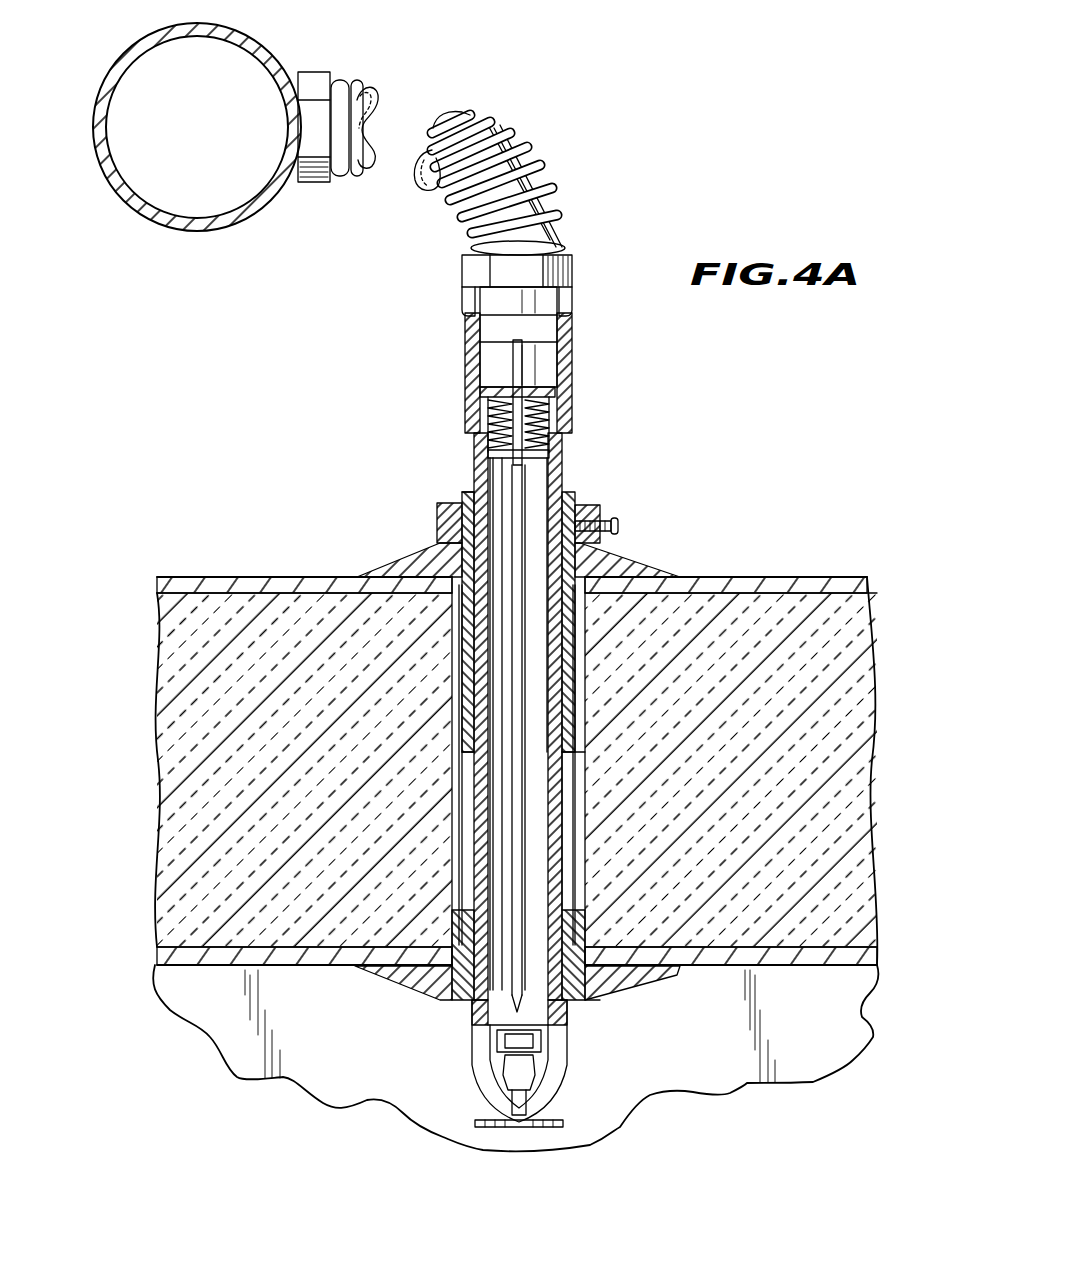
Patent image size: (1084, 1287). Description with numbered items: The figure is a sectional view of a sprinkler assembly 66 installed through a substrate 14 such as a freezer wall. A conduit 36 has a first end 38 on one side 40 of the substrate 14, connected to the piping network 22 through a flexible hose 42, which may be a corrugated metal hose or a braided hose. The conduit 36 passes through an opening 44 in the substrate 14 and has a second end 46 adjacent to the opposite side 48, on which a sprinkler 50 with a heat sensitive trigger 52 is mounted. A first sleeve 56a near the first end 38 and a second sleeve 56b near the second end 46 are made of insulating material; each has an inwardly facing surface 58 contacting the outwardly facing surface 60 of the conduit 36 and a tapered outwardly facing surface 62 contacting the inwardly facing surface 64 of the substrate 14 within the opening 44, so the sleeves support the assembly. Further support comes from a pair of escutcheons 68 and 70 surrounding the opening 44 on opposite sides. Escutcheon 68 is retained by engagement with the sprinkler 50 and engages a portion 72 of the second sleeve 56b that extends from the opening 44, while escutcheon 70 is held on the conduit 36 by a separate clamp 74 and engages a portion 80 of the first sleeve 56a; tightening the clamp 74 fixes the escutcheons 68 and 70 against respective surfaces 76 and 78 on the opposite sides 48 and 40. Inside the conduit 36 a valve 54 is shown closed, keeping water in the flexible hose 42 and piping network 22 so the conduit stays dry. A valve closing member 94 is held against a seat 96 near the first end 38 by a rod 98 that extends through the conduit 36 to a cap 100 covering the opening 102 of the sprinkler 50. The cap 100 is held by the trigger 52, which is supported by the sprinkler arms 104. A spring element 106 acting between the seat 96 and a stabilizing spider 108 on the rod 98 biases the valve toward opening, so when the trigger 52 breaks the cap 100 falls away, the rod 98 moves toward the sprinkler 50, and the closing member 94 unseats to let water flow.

The substrate 14 is at (875, 580).
The piping network 22 is at (205, 233).
The conduit 36 is at (563, 484).
The first end 38 is at (565, 300).
The one side 40 is at (769, 541).
The flexible hose 42 is at (533, 177).
The opening 44 is at (576, 772).
The second end 46 is at (470, 1012).
The opposite side 48 is at (515, 1058).
The sprinkler 50 is at (570, 1040).
The heat sensitive trigger 52 is at (560, 1083).
The valve 54 is at (575, 392).
The first sleeve 56a is at (600, 563).
The second sleeve 56b is at (600, 985).
The inwardly facing surface 58 is at (580, 880).
The outwardly facing surface 60 is at (578, 830).
The outwardly facing surface 62 is at (458, 868).
The inwardly facing surface 64 is at (462, 820).
The sprinkler assembly 66 is at (755, 453).
The escutcheon 68 is at (677, 973).
The escutcheon 70 is at (360, 575).
The portion 72 is at (440, 978).
The clamp 74 is at (462, 494).
The surface 76 is at (866, 985).
The surface 78 is at (180, 577).
The portion 80 is at (400, 562).
The valve closing member 94 is at (500, 392).
The seat 96 is at (485, 392).
The rod 98 is at (522, 690).
The cap 100 is at (487, 1060).
The opening 102 is at (483, 1022).
The sprinkler arms 104 is at (485, 1093).
The spring element 106 is at (552, 418).
The stabilizing spider 108 is at (545, 449).